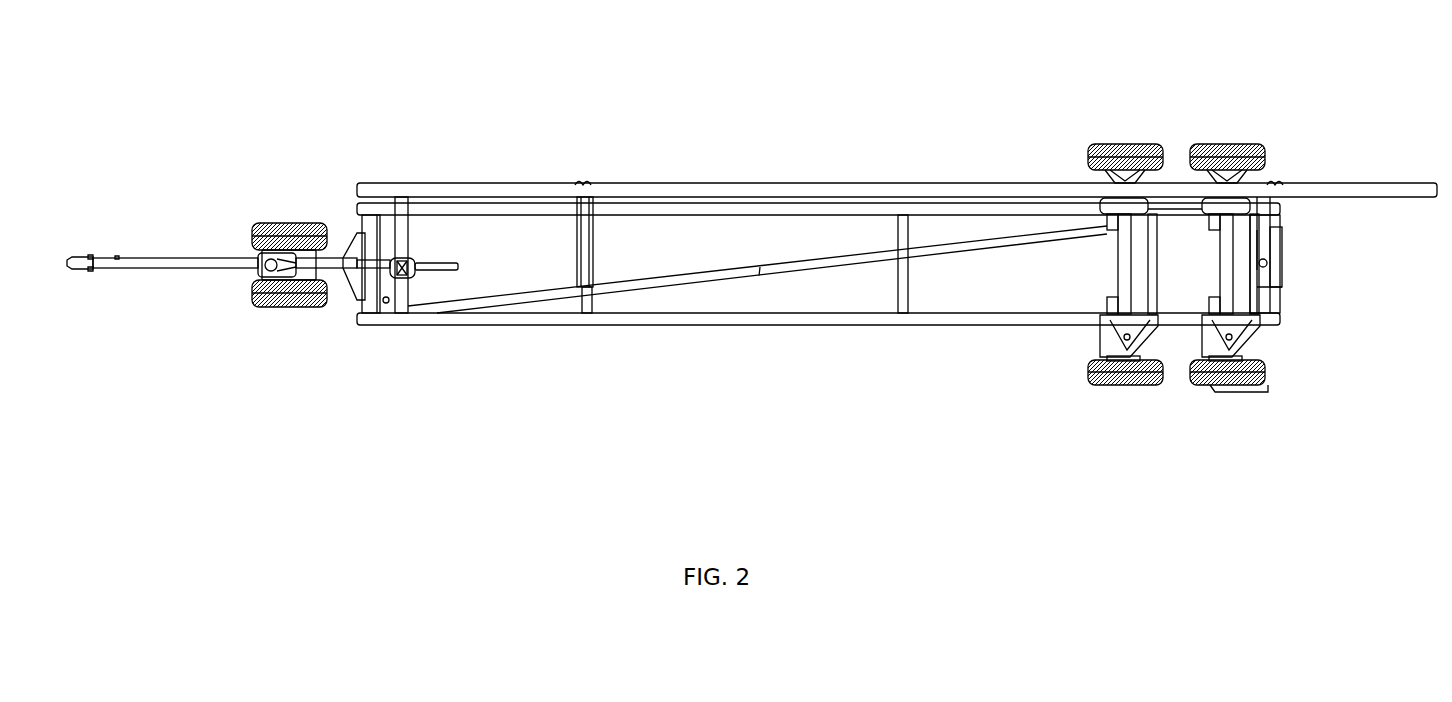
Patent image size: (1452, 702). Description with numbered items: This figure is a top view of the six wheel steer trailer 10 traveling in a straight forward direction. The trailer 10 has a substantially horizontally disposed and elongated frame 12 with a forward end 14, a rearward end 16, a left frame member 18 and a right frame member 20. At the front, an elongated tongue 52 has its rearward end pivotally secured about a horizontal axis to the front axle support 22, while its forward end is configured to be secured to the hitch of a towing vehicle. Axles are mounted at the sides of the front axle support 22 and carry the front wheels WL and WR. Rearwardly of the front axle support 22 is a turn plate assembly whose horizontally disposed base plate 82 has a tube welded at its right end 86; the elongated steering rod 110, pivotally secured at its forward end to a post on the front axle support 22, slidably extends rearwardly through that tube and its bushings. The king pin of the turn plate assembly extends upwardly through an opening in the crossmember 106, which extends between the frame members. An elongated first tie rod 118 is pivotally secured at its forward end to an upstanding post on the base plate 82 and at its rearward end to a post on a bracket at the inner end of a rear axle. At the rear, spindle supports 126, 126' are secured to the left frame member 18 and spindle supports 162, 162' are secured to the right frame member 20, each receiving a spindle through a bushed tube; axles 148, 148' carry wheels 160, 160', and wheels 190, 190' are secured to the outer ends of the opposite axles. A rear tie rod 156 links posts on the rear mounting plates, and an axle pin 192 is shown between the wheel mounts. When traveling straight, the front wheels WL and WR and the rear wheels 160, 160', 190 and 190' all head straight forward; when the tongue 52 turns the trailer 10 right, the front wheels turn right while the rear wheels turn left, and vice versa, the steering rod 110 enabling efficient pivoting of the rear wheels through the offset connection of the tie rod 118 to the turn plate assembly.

The six wheel steer trailer 10 is at (738, 150).
The frame 12 is at (723, 326).
The forward end 14 is at (348, 303).
The rearward end 16 is at (1258, 273).
The left frame member 18 is at (785, 326).
The right frame member 20 is at (851, 208).
The front axle support 22 is at (243, 277).
The tongue 52 is at (163, 255).
The base plate 82 is at (417, 287).
The right end 86 is at (388, 303).
The crossmember 106 is at (403, 225).
The steering rod 110 is at (447, 255).
The first tie rod 118 is at (690, 268).
The spindle support 126 is at (1057, 361).
The spindle support 126' is at (1310, 341).
The axle 148 is at (1142, 404).
The axle 148' is at (1301, 386).
The rear tie rod 156 is at (1157, 270).
The wheel 160 is at (1089, 401).
The wheel 160' is at (1265, 416).
The spindle support 162 is at (1073, 156).
The spindle support 162' is at (1302, 167).
The wheel 190 is at (1138, 104).
The wheel 190' is at (1291, 112).
The axle pin 192 is at (1172, 208).
The right front wheel WR is at (280, 225).
The left front wheel WL is at (287, 307).